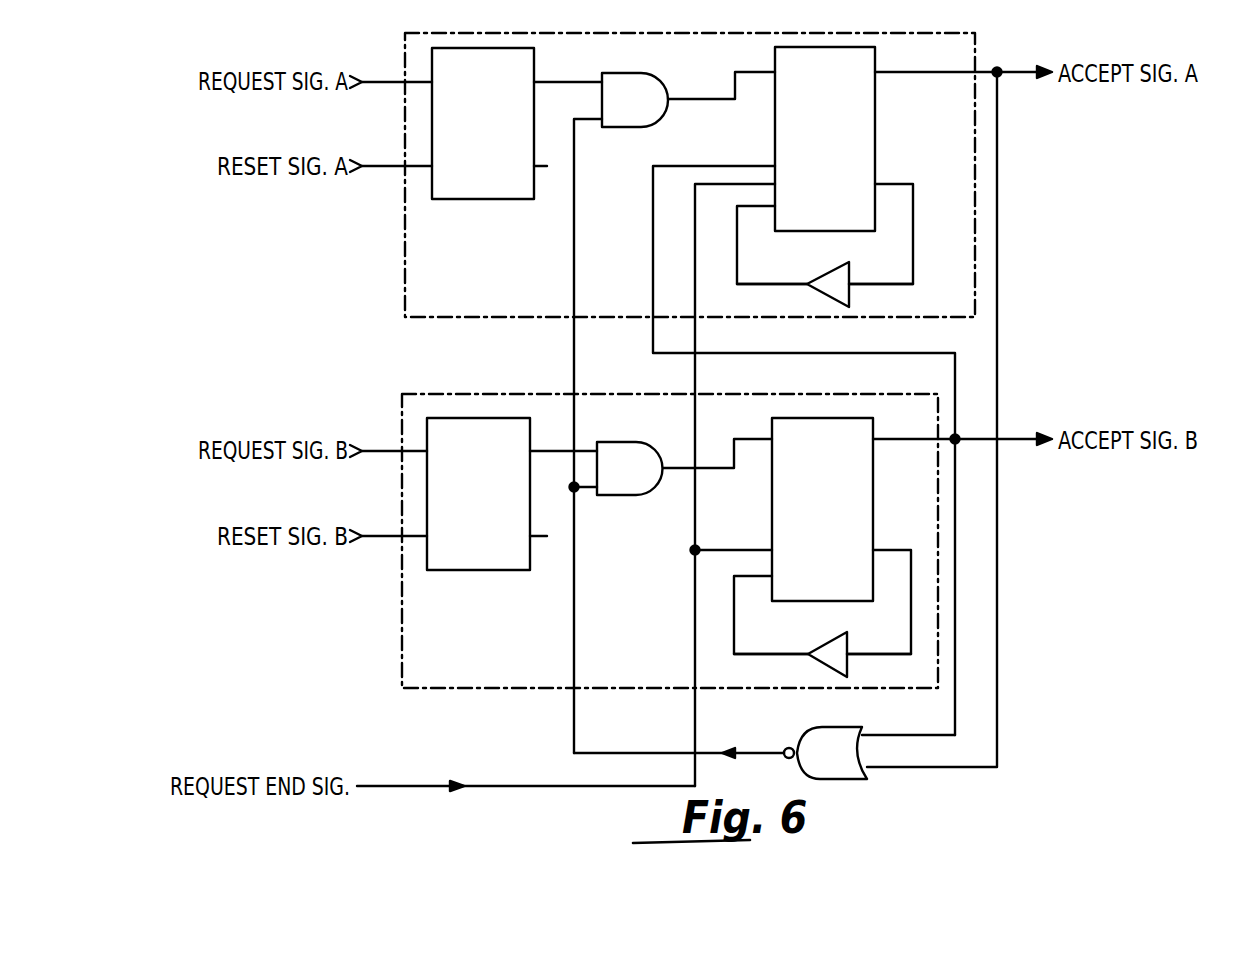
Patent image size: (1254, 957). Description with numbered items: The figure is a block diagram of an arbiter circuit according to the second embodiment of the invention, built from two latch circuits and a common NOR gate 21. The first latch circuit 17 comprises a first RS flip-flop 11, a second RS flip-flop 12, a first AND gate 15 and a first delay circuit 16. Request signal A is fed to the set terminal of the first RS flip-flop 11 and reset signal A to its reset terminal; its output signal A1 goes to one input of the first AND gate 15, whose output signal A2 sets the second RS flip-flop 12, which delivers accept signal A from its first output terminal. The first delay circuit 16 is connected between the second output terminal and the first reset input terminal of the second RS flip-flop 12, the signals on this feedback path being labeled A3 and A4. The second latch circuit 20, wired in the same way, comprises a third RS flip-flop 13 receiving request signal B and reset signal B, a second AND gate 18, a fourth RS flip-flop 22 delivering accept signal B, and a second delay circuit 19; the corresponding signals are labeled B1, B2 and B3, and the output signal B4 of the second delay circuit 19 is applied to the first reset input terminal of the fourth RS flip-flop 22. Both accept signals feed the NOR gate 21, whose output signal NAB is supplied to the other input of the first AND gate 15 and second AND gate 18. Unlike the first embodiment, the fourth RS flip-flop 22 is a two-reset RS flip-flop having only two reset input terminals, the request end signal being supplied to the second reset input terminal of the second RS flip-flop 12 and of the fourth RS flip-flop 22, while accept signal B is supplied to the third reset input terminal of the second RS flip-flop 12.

The first RS flip-flop 11 is at (480, 200).
The second RS flip-flop 12 is at (868, 142).
The third RS flip-flop 13 is at (476, 571).
The first AND gate 15 is at (643, 85).
The first delay circuit 16 is at (830, 276).
The first latch circuit 17 is at (640, 32).
The second AND gate 18 is at (630, 483).
The second delay circuit 19 is at (832, 647).
The second latch circuit 20 is at (397, 612).
The NOR gate 21 is at (830, 736).
The fourth RS flip-flop 22 is at (862, 514).
The output signal A1 is at (552, 82).
The output signal A2 is at (752, 60).
The signal A3 is at (880, 284).
The signal A4 is at (783, 284).
The signal B1 is at (585, 451).
The signal B2 is at (750, 428).
The signal B3 is at (886, 654).
The output signal B4 is at (778, 654).
The output signal NAB is at (755, 753).